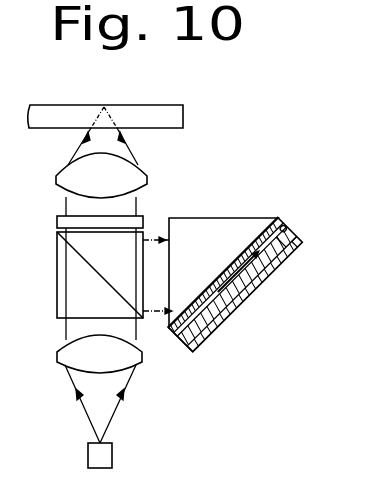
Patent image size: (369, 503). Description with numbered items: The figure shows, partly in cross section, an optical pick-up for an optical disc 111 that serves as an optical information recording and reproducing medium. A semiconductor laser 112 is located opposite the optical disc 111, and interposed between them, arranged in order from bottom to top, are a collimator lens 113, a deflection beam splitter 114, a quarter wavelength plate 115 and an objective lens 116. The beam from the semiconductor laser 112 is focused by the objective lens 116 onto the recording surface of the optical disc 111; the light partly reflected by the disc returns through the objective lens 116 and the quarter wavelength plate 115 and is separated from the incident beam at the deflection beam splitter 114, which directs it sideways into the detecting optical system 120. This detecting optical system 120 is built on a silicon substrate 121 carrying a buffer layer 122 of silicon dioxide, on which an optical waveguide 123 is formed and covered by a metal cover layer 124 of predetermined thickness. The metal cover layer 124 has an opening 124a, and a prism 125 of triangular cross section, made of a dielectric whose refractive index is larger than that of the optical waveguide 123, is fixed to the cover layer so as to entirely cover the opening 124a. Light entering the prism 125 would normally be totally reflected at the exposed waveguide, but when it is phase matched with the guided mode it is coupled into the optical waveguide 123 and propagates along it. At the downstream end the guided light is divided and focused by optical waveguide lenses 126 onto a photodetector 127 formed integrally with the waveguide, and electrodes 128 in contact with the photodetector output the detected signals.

The optical disc 111 is at (150, 113).
The semiconductor laser 112 is at (92, 455).
The collimator lens 113 is at (63, 352).
The deflection beam splitter 114 is at (75, 268).
The quarter wavelength plate 115 is at (60, 221).
The objective lens 116 is at (65, 172).
The detecting optical system 120 is at (196, 222).
The Si substrate 121 is at (205, 336).
The buffer layer 122 is at (220, 320).
The optical waveguide 123 is at (203, 348).
The metal cover layer 124 is at (262, 230).
The opening 124a is at (228, 303).
The prism 125 is at (181, 221).
The optical waveguide lens 126 is at (276, 262).
The photodetector 127 is at (293, 250).
The electrode 128 is at (283, 225).